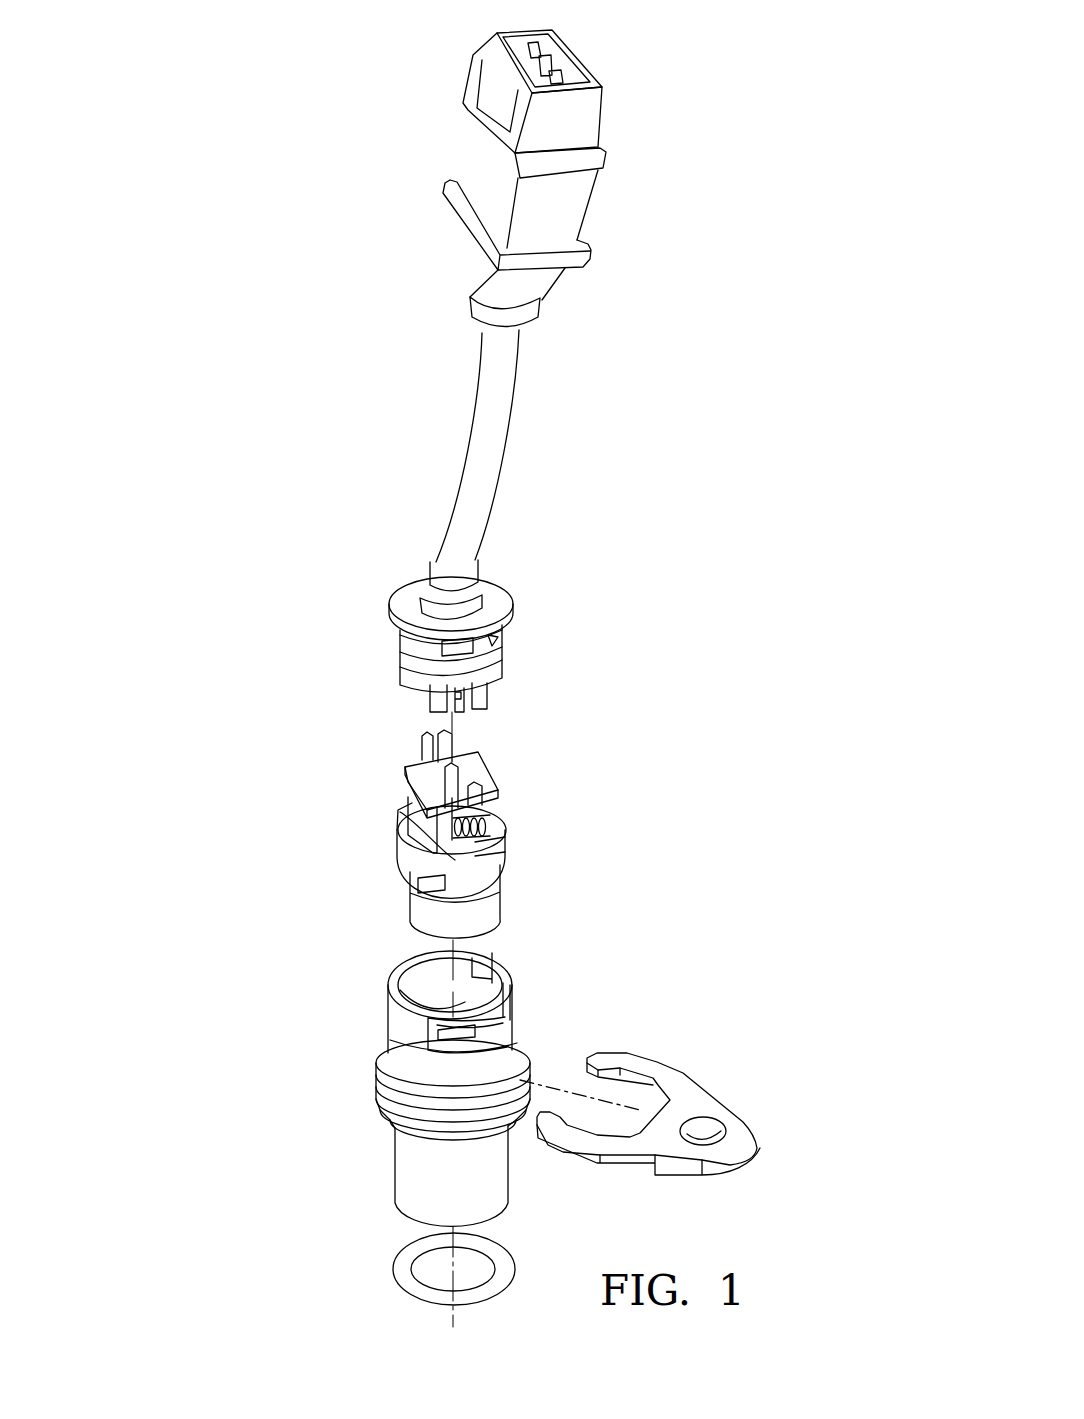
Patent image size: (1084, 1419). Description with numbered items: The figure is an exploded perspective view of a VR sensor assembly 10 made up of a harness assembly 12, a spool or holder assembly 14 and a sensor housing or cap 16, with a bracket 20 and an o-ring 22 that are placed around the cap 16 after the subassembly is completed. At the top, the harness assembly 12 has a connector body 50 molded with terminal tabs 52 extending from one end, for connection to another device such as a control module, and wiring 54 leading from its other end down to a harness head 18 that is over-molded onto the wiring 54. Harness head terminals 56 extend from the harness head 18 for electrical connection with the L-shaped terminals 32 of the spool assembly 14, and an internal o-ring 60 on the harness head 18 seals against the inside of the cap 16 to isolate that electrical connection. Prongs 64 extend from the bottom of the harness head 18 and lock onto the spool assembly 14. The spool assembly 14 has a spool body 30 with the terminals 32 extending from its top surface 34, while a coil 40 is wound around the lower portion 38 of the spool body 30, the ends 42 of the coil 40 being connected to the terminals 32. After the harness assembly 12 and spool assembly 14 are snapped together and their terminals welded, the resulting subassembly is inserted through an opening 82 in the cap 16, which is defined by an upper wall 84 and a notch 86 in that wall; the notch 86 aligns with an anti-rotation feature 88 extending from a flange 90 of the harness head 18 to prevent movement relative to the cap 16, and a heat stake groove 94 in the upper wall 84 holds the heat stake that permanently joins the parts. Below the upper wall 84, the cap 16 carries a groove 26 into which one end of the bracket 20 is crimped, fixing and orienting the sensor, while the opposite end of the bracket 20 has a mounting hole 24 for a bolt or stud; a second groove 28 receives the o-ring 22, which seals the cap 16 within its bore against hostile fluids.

The sensor assembly 10 is at (293, 1143).
The harness assembly 12 is at (627, 381).
The spool assembly 14 is at (527, 843).
The cap 16 is at (455, 1074).
The harness head 18 is at (436, 635).
The bracket 20 is at (678, 1105).
The o-ring 22 is at (405, 1258).
The mounting hole 24 is at (718, 1125).
The groove 26 is at (410, 1093).
The second groove 28 is at (410, 1118).
The spool body 30 is at (418, 803).
The L-shaped terminals 32 is at (470, 763).
The top surface 34 is at (413, 768).
The lower portion 38 is at (408, 903).
The coil 40 is at (487, 903).
The ends 42 is at (487, 817).
The connector body 50 is at (575, 198).
The terminal tabs 52 is at (563, 42).
The wiring 54 is at (485, 388).
The harness head terminals 56 is at (466, 696).
The internal o-ring 60 is at (405, 656).
The prongs 64 is at (442, 698).
The opening 82 is at (413, 963).
The upper wall 84 is at (398, 1023).
The notch 86 is at (493, 983).
The anti-rotation feature 88 is at (497, 640).
The flange 90 is at (388, 617).
The heat stake groove 94 is at (490, 1020).